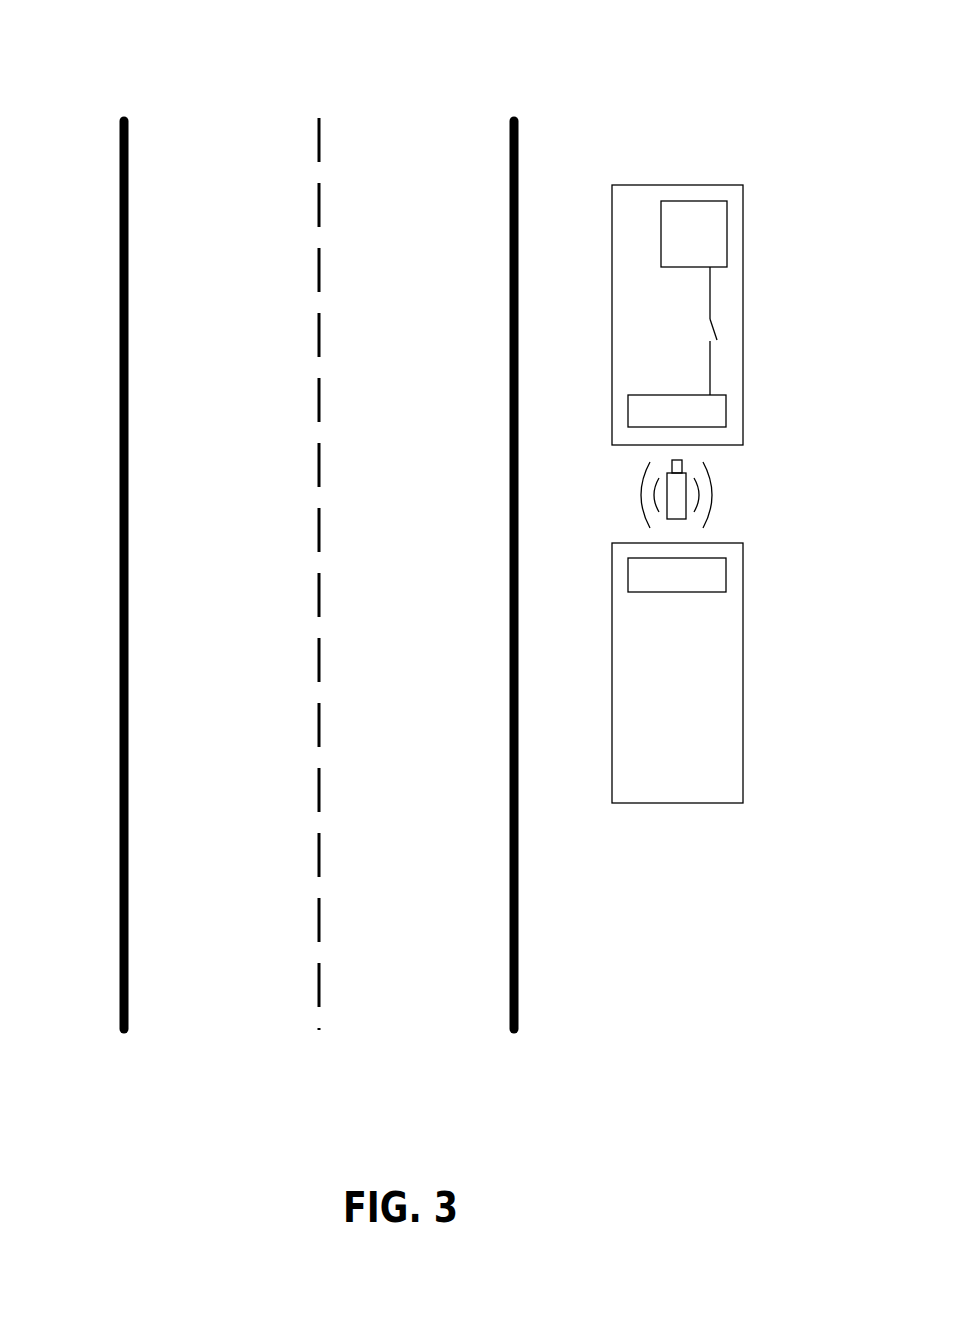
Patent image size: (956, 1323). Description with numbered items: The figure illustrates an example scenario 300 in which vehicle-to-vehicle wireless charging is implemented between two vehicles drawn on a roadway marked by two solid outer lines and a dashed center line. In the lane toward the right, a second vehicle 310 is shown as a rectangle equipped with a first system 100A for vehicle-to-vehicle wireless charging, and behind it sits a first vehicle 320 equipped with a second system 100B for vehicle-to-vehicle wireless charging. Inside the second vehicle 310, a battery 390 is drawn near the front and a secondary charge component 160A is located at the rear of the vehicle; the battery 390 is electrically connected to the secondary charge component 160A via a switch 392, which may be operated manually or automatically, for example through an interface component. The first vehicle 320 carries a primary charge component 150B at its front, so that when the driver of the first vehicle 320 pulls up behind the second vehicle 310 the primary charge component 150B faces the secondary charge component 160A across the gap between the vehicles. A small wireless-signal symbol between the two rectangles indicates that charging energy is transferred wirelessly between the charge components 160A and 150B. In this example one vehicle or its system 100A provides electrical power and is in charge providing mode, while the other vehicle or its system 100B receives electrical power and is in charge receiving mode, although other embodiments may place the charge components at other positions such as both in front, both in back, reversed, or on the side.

The example scenario 300 is at (117, 46).
The second vehicle 310 is at (724, 313).
The first vehicle 320 is at (724, 669).
The switch 392 is at (728, 315).
The battery 390 is at (694, 234).
The first system for vehicle-to-vehicle wireless charging 100A is at (656, 315).
The secondary charge component 160A is at (677, 411).
The primary charge component 150B is at (677, 575).
The second system for vehicle-to-vehicle wireless charging 100B is at (676, 670).